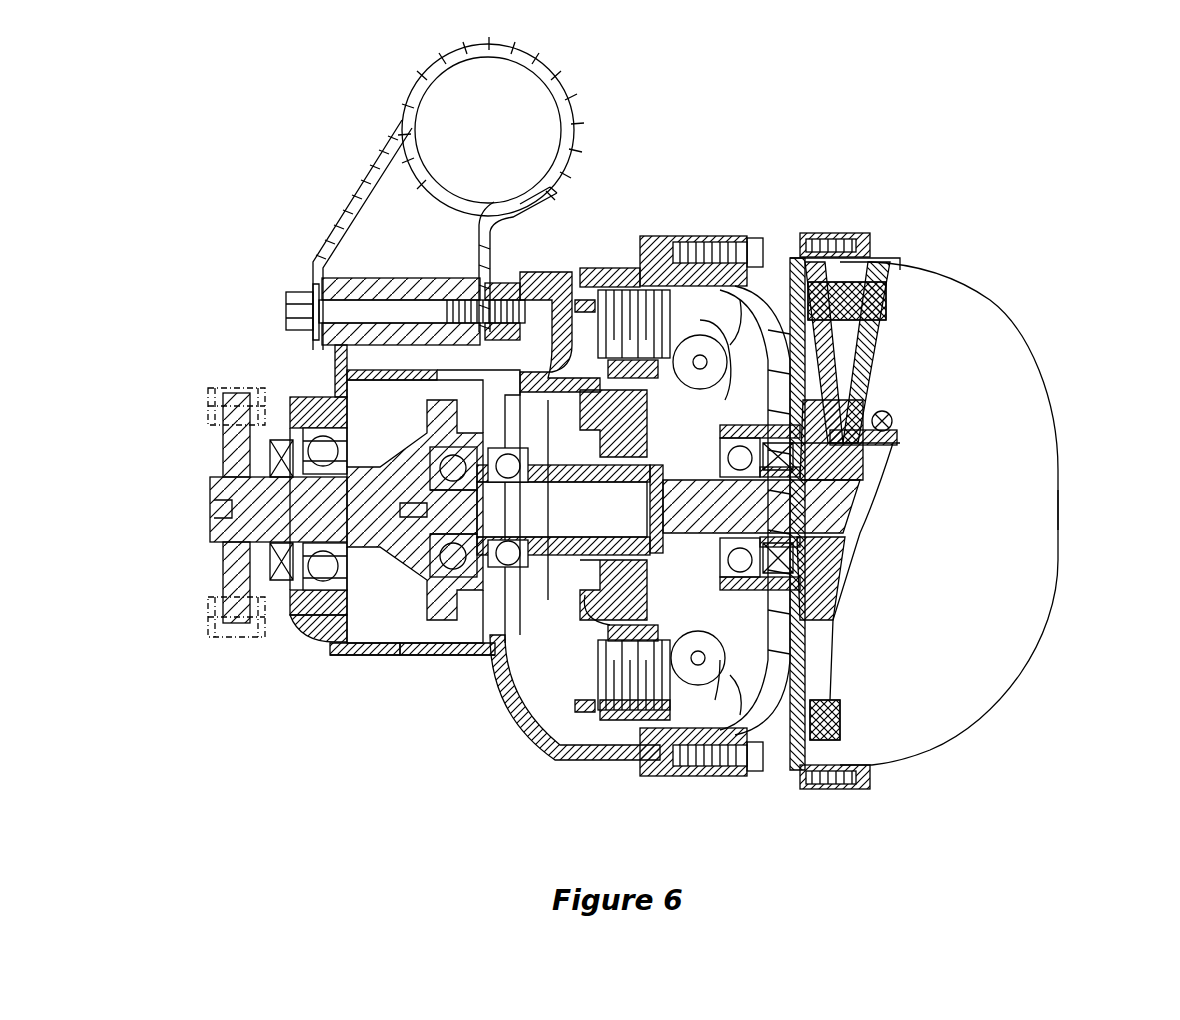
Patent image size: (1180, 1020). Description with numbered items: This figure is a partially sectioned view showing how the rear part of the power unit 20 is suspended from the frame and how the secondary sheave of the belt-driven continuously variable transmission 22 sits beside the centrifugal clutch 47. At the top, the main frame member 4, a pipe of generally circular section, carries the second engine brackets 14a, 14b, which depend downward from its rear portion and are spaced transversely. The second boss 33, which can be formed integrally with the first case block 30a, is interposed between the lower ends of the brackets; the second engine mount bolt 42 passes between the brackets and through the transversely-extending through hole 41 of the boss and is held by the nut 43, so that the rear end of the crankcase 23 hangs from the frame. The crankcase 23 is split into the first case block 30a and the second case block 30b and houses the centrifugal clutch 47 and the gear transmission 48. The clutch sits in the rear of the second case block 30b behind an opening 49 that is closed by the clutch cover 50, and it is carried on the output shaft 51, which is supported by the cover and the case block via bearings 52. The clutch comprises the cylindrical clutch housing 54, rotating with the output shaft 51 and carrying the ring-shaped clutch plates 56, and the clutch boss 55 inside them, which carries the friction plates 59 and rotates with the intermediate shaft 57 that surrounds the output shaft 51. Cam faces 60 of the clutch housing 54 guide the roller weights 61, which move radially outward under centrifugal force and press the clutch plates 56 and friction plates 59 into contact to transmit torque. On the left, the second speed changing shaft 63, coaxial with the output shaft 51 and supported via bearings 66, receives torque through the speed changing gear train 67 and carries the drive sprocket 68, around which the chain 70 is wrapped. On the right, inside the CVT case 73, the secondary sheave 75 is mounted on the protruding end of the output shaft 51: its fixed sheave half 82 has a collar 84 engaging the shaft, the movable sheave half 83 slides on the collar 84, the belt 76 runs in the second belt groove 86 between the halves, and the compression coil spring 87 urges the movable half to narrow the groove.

The main frame member 4 is at (541, 64).
The second engine bracket 14a is at (348, 198).
The second engine bracket 14b is at (492, 228).
The power unit 20 is at (930, 215).
The belt-driven continuously variable transmission 22 is at (1018, 380).
The crankcase 23 is at (497, 730).
The first case block 30a is at (400, 660).
The second case block 30b is at (495, 665).
The second boss 33 is at (401, 290).
The through hole 41 is at (438, 300).
The second engine mount bolt 42 is at (286, 309).
The nut 43 is at (500, 283).
The centrifugal clutch 47 is at (542, 775).
The gear transmission 48 is at (405, 583).
The opening 49 is at (684, 695).
The clutch cover 50 is at (747, 690).
The output shaft 51 is at (830, 505).
The bearings 52 is at (822, 533).
The clutch housing 54 is at (797, 677).
The clutch boss 55 is at (602, 628).
The clutch plates 56 is at (655, 305).
The intermediate shaft 57 is at (584, 480).
The friction plates 59 is at (641, 712).
The cam faces 60 is at (692, 265).
The roller weights 61 is at (719, 330).
The second speed changing shaft 63 is at (375, 468).
The bearings 66 is at (322, 440).
The speed changing gear train 67 is at (385, 657).
The drive sprocket 68 is at (236, 440).
The chain 70 is at (208, 618).
The CVT case 73 is at (1052, 512).
The secondary sheave 75 is at (900, 168).
The belt 76 is at (845, 727).
The fixed sheave half 82 is at (810, 250).
The movable sheave half 83 is at (883, 280).
The collar 84 is at (855, 475).
The second belt groove 86 is at (852, 356).
The compression coil spring 87 is at (894, 422).